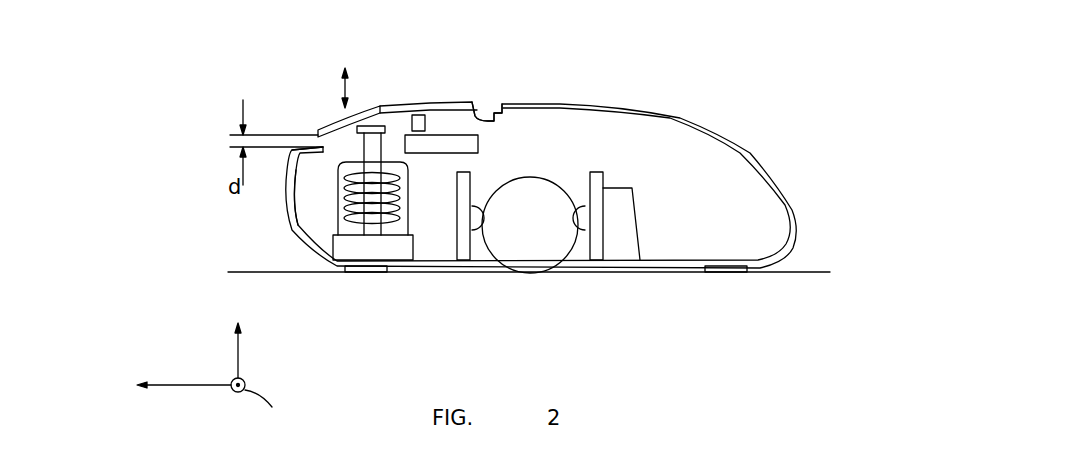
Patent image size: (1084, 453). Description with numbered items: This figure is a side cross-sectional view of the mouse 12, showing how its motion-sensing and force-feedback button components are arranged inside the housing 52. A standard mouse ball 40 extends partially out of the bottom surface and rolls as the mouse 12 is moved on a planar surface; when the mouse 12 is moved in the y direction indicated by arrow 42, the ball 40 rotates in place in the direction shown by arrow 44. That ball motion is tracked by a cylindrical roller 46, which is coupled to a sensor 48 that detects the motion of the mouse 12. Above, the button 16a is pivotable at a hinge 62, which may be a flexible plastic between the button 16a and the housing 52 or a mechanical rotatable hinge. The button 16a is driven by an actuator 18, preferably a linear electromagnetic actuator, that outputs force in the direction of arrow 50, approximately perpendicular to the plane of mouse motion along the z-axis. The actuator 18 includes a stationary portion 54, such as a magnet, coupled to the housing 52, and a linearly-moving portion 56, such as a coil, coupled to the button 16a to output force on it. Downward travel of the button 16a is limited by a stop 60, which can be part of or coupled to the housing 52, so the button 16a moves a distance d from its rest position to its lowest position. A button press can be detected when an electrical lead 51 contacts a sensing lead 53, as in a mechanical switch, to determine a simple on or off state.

The mouse 12 is at (790, 85).
The button 16a is at (402, 108).
The actuator 18 is at (325, 206).
The mouse ball 40 is at (553, 252).
The arrow 42 is at (192, 385).
The arrow 44 is at (496, 163).
The cylindrical roller 46 is at (587, 218).
The sensor 48 is at (630, 207).
The arrow 50 is at (337, 78).
The electrical lead 51 is at (446, 116).
The housing 52 is at (783, 193).
The sensing lead 53 is at (468, 145).
The stationary portion 54 is at (407, 213).
The linearly-moving portion 56 is at (372, 143).
The stop 60 is at (303, 143).
The hinge 62 is at (484, 88).